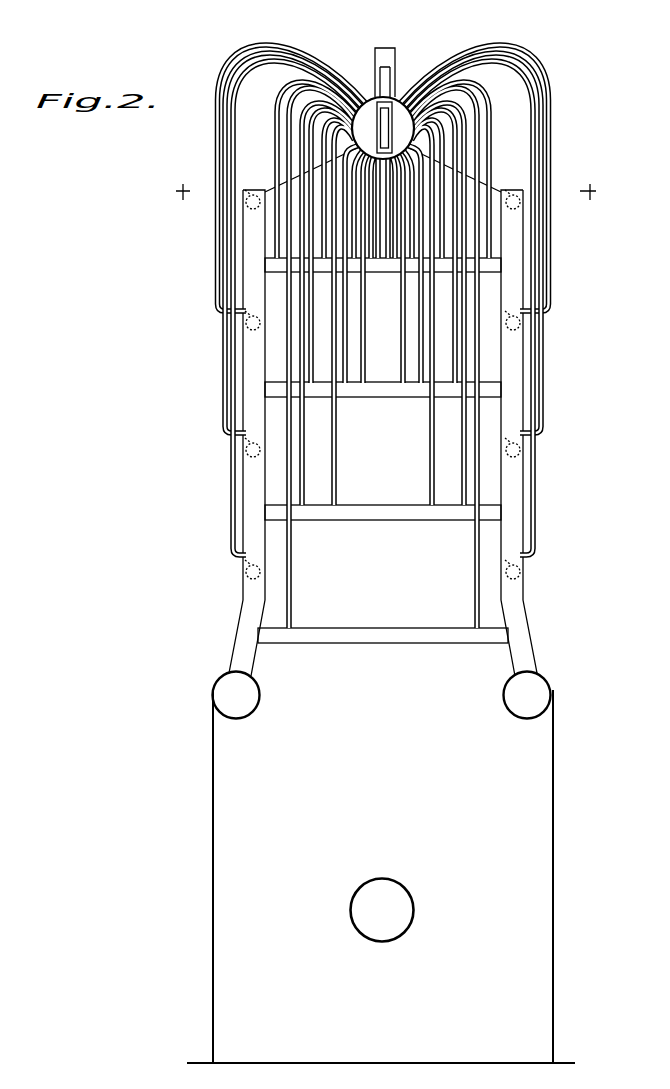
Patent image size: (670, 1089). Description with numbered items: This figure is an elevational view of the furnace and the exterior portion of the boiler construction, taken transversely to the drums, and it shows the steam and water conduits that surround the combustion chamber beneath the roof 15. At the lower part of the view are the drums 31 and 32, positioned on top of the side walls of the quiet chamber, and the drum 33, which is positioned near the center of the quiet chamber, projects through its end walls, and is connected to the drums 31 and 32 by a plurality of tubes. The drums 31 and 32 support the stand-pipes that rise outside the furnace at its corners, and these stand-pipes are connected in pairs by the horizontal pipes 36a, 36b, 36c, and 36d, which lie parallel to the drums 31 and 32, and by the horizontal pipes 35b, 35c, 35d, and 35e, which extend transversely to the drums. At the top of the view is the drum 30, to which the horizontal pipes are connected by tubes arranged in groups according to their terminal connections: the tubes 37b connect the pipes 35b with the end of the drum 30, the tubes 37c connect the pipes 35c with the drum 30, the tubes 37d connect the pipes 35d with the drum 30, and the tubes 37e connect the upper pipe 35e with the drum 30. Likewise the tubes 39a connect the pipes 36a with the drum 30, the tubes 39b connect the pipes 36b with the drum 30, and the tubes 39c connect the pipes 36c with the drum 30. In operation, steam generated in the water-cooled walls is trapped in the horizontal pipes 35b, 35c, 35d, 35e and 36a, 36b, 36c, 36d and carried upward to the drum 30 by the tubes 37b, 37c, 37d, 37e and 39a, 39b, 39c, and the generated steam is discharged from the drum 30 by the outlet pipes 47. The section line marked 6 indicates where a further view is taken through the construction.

The section line 6- 6 is at (388, 193).
The roof 15 is at (485, 177).
The drum 30 is at (395, 105).
The drum 31 is at (246, 697).
The drum 32 is at (548, 697).
The drum 33 is at (393, 886).
The horizontal pipe 35b is at (415, 638).
The horizontal pipe 35c is at (400, 518).
The horizontal pipe 35d is at (401, 386).
The upper horizontal pipe 35e is at (506, 269).
The horizontal pipe 36a is at (527, 572).
The horizontal pipe 36b is at (527, 450).
The horizontal pipe 36c is at (525, 325).
The horizontal pipe 36d is at (522, 200).
The tubes 37b is at (290, 618).
The tubes 37c is at (433, 482).
The tubes 37d is at (455, 360).
The tubes 37e is at (492, 248).
The tubes 39a is at (528, 480).
The tubes 39b is at (543, 352).
The tubes 39c is at (536, 78).
The outlet pipes 47 is at (372, 51).